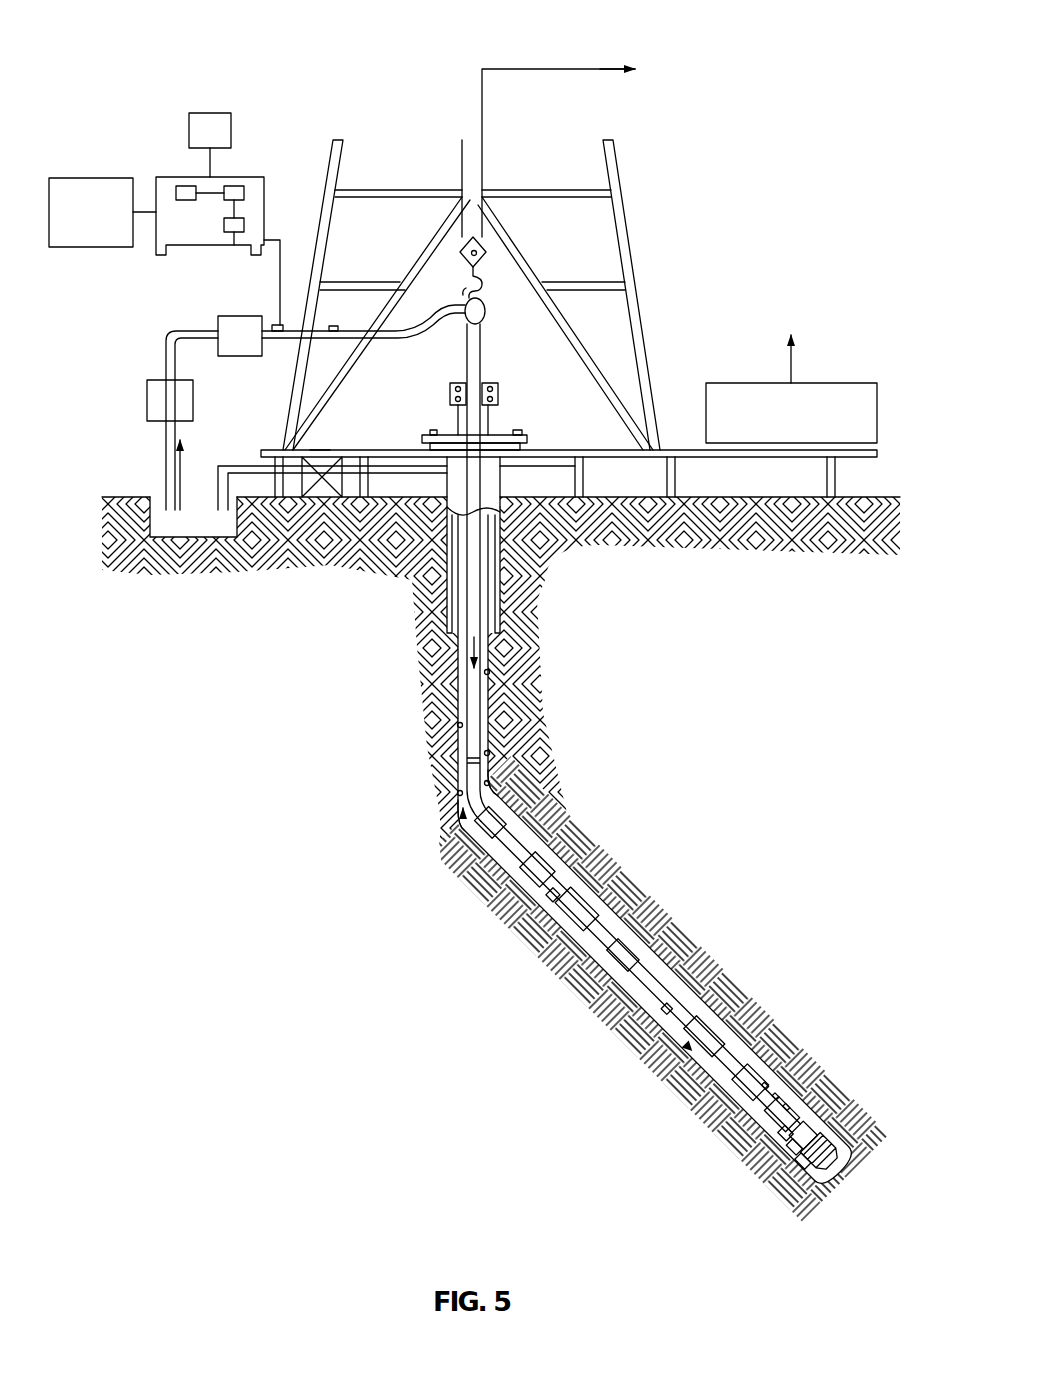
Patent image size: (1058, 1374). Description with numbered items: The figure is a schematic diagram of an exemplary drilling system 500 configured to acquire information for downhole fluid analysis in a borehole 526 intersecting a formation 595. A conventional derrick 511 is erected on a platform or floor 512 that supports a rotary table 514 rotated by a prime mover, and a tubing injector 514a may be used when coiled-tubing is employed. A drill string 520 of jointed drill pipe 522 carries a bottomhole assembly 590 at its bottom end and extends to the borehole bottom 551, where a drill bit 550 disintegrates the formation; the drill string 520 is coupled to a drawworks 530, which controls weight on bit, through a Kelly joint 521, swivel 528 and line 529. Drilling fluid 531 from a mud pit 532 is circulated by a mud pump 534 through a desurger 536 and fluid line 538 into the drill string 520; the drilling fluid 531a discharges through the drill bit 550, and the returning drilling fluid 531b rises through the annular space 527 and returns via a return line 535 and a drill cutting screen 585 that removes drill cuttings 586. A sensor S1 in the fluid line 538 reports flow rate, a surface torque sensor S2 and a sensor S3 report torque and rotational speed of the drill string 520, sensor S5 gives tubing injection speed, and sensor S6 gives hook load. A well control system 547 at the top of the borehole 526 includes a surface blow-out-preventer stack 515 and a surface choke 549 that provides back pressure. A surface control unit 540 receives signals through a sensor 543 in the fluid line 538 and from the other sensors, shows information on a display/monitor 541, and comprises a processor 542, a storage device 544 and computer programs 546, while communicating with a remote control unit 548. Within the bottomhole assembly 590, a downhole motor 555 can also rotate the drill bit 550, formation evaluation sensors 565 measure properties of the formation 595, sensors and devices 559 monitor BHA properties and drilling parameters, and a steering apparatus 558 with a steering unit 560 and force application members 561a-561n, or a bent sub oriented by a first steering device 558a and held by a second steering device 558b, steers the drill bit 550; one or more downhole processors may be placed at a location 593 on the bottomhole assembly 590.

The drilling system 500 is at (138, 35).
The derrick 511 is at (637, 297).
The platform or floor 512 is at (660, 445).
The rotary table 514 is at (500, 433).
The tubing injector 514a is at (500, 393).
The surface blow-out-preventer stack 515 is at (499, 492).
The drill string 520 is at (490, 730).
The Kelly joint 521 is at (483, 370).
The drill pipe 522 is at (462, 712).
The borehole 526 is at (489, 788).
The annular space 527 is at (515, 848).
The swivel 528 is at (466, 314).
The line 529 is at (484, 170).
The drawworks 530 is at (813, 382).
The drilling fluid 531 is at (160, 525).
The drilling fluid from the drilling tubular 531a is at (458, 660).
The returning drilling fluid 531b is at (452, 828).
The mud pit 532 is at (175, 530).
The mud pump 534 is at (147, 400).
The return line 535 is at (392, 473).
The desurger 536 is at (218, 326).
The fluid line 538 is at (297, 338).
The surface control unit 540 is at (192, 177).
The display/monitor 541 is at (210, 113).
The processor 542 is at (180, 186).
The sensor 543 is at (277, 325).
The storage device 544 is at (236, 186).
The computer programs 546 is at (234, 232).
The well control system 547 is at (428, 390).
The remote control unit 548 is at (120, 247).
The surface choke 549 is at (546, 527).
The drill bit 550 is at (843, 1143).
The borehole bottom 551 is at (797, 1217).
The downhole motor 555 is at (563, 913).
The steering apparatus 558 is at (787, 1100).
The first steering device 558a is at (798, 1168).
The second steering device 558b is at (790, 1152).
The sensors and devices 559 is at (815, 1125).
The steering unit 560 is at (783, 1143).
The force application members 561a-561n is at (783, 1087).
The formation evaluation sensors 565 is at (680, 1067).
The drill cutting screen 585 is at (322, 448).
The drill cuttings 586 is at (488, 672).
The bottomhole assembly 590 is at (735, 878).
The downhole processor location 593 is at (637, 1010).
The formation 595 is at (775, 930).
The flow rate sensor S1 is at (336, 326).
The surface torque sensor S2 is at (579, 462).
The rotational speed sensor S3 is at (430, 432).
The tubing injection speed sensor S5 is at (485, 322).
The hook load sensor S6 is at (487, 292).